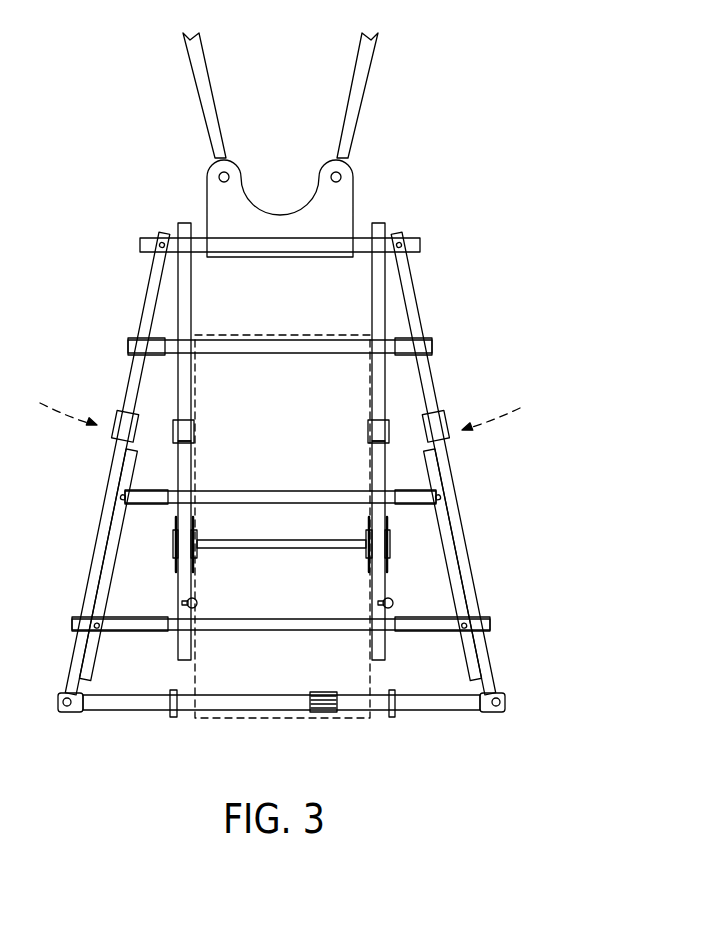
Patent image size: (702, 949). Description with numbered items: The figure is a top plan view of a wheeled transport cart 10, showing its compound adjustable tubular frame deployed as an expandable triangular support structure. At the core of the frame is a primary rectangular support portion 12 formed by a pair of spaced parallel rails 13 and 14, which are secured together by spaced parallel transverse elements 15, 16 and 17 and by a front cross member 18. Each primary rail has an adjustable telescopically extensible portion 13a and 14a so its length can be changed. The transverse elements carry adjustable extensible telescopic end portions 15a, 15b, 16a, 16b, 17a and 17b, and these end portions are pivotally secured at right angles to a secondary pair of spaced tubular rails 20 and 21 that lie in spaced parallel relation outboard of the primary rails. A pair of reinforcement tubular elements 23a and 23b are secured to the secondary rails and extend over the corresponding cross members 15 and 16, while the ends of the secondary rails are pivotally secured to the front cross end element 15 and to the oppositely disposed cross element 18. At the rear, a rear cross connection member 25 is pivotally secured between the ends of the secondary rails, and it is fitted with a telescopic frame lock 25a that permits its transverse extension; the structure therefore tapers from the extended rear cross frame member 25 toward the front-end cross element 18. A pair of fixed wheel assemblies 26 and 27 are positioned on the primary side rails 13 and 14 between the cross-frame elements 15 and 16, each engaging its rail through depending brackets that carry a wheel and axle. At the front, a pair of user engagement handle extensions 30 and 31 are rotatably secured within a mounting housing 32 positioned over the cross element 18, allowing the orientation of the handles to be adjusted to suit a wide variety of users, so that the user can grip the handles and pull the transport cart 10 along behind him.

The wheeled transport cart 10 is at (508, 380).
The primary rectangular support portion 12 is at (174, 389).
The rail 13 is at (383, 463).
The adjustable telescopically extensible portion 13a is at (378, 378).
The rail 14 is at (185, 565).
The adjustable telescopically extensible portion 14a is at (182, 302).
The transverse element 15 is at (230, 628).
The adjustable extensible telescopic end portion 15a is at (132, 628).
The adjustable extensible telescopic end portion 15b is at (417, 628).
The transverse element 16 is at (310, 493).
The adjustable extensible telescopic end portion 16a is at (145, 500).
The adjustable extensible telescopic end portion 16b is at (410, 497).
The transverse element 17 is at (215, 347).
The adjustable extensible telescopic end portion 17a is at (403, 345).
The adjustable extensible telescopic end portion 17b is at (127, 346).
The front cross member 18 is at (140, 245).
The secondary rail 20 is at (465, 508).
The secondary rail 21 is at (98, 490).
The reinforcement tubular element 23a is at (455, 582).
The reinforcement tubular element 23b is at (102, 595).
The rear cross connection member 25 is at (427, 710).
The telescopic frame lock 25a is at (322, 712).
The fixed wheel assembly 26 is at (395, 548).
The fixed wheel assembly 27 is at (165, 544).
The handle extension 30 is at (345, 117).
The handle extension 31 is at (208, 115).
The mounting housing 32 is at (345, 195).